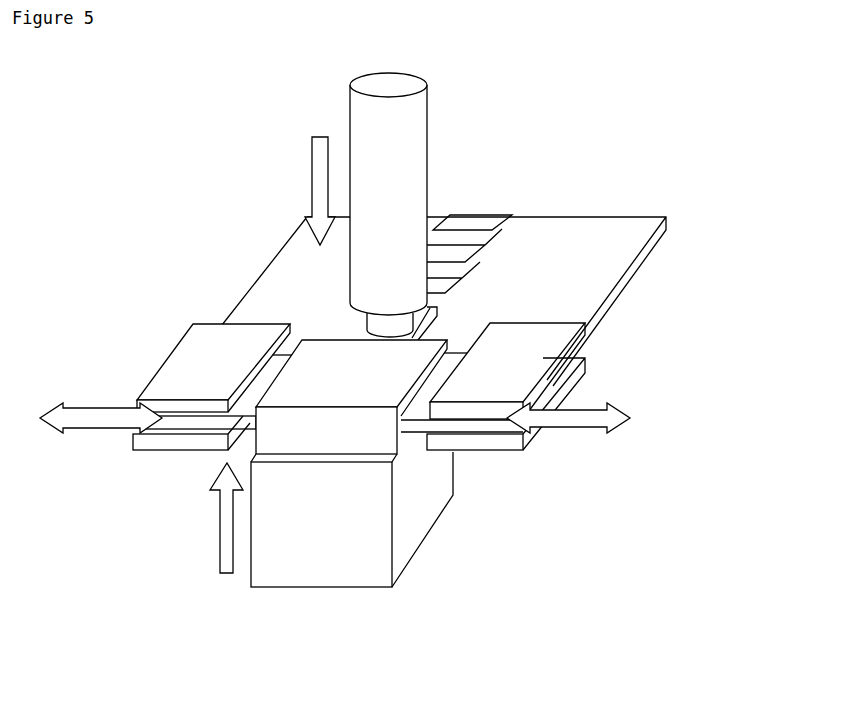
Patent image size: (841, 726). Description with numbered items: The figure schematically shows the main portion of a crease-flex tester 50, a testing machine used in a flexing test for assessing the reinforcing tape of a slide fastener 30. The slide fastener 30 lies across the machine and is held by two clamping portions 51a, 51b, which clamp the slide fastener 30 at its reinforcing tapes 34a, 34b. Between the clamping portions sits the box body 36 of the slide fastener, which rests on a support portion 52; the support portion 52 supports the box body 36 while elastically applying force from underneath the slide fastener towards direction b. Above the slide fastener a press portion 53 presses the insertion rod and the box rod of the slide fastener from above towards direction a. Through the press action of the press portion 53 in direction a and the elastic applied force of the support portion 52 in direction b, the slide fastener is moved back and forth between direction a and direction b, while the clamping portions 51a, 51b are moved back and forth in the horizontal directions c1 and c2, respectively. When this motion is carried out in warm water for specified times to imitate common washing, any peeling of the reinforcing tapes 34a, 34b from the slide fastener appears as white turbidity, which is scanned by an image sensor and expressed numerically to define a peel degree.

The slide fastener 30 is at (592, 232).
The reinforcing tape 34a is at (265, 385).
The reinforcing tape 34b is at (478, 345).
The box body 36 is at (337, 357).
The crease-flex tester 50 is at (520, 548).
The clamping portion 51a is at (187, 368).
The clamping portion 51b is at (537, 367).
The support portion 52 is at (343, 565).
The press portion 53 is at (407, 150).
The direction a is at (313, 180).
The direction b is at (225, 523).
The direction c1 is at (97, 418).
The direction c2 is at (590, 418).